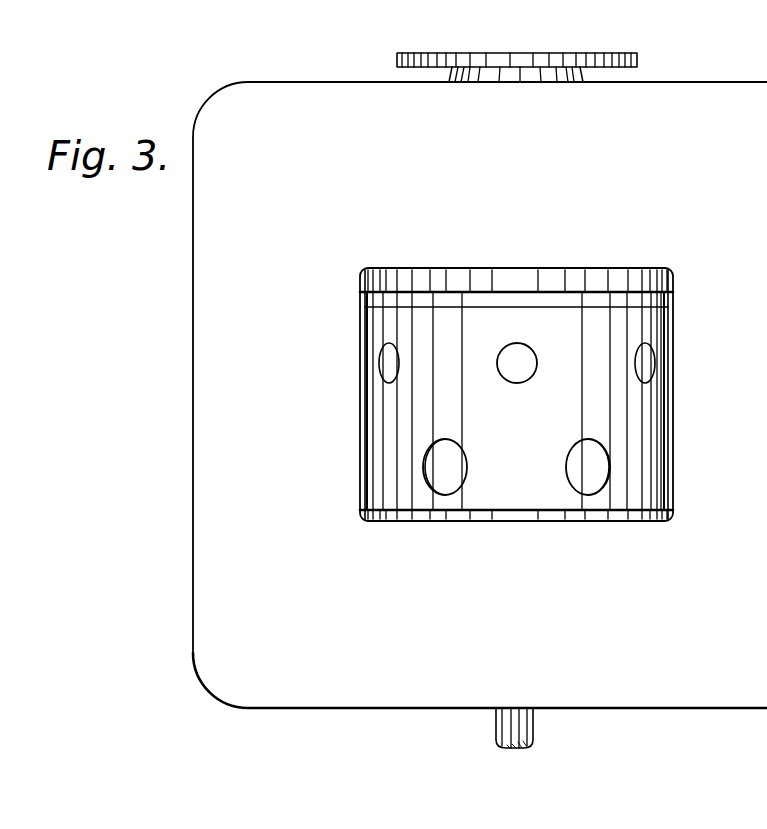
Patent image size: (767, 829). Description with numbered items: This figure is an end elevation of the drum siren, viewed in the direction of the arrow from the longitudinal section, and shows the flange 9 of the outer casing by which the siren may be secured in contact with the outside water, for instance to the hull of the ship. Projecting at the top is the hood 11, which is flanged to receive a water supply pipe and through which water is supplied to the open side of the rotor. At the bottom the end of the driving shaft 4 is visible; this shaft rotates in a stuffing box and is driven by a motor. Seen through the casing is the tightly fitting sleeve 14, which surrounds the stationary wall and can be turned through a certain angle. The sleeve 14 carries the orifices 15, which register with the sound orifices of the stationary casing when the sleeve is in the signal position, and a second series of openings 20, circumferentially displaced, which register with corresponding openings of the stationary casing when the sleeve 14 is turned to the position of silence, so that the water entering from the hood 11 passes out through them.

The flange 9 is at (480, 395).
The hood 11 is at (505, 75).
The driving shaft 4 is at (518, 722).
The sleeve 14 is at (516, 394).
The orifices 15 is at (395, 366).
The openings 20 is at (583, 477).